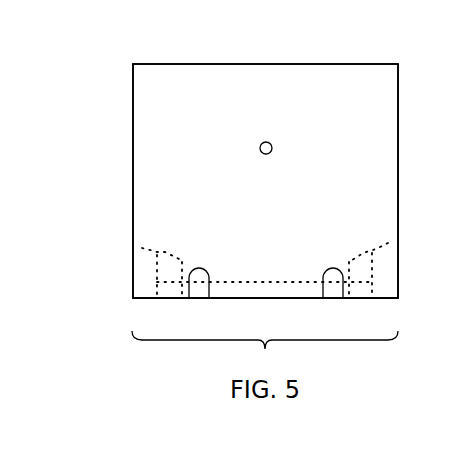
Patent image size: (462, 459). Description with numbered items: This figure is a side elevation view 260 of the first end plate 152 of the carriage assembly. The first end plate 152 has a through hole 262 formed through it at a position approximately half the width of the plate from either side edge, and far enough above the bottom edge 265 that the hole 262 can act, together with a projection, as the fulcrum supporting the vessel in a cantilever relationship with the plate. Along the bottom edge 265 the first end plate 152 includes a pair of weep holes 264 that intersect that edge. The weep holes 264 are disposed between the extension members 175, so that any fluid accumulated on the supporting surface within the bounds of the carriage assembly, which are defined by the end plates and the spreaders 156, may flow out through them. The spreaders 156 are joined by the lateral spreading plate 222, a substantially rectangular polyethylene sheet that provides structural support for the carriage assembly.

The side elevation view 260 is at (98, 61).
The first end plate 152 is at (333, 64).
The through hole 262 is at (270, 144).
The spreaders 156 is at (142, 247).
The extension members 175 is at (180, 270).
The lateral spreading plate 222 is at (262, 280).
The weep holes 264 is at (198, 282).
The bottom edge 265 is at (167, 296).